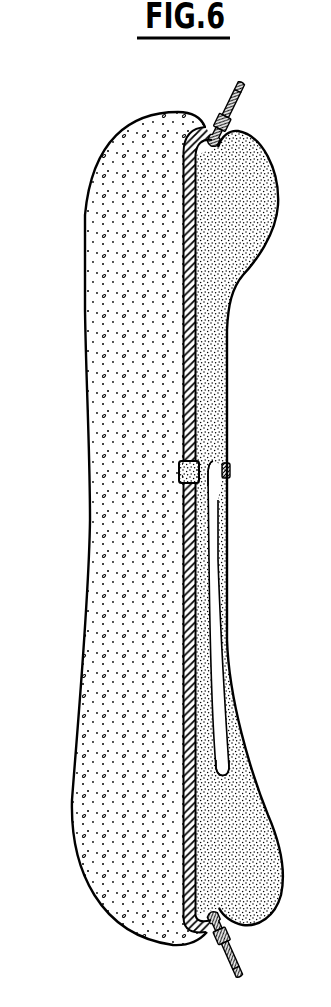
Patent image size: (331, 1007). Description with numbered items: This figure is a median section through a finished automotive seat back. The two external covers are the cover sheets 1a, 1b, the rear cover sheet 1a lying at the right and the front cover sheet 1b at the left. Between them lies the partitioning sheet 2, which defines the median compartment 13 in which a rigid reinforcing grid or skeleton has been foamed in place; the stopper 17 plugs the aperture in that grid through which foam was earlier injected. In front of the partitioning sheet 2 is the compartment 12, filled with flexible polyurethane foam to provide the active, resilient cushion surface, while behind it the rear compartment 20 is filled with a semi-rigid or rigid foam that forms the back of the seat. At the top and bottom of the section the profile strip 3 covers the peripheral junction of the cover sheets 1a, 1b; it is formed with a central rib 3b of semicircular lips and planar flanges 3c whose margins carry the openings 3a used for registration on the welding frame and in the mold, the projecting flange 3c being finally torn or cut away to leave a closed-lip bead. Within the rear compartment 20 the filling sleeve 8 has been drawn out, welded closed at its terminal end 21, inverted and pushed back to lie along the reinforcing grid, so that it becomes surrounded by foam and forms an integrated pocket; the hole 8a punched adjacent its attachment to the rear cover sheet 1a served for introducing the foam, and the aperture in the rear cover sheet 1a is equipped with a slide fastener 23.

The cover sheet 1a is at (228, 375).
The cover sheet 1b is at (85, 378).
The partitioning sheet 2 is at (183, 258).
The profile strip 3 is at (221, 143).
The openings 3a is at (245, 88).
The central rib 3b is at (230, 123).
The planar flange 3c is at (227, 104).
The filling sleeve 8 is at (207, 628).
The hole 8a is at (217, 454).
The compartment 12 is at (142, 597).
The compartment 13 is at (186, 320).
The stopper 17 is at (180, 473).
The rear compartment 20 is at (220, 247).
The welded closed terminal end 21 is at (222, 763).
The slide fastener 23 is at (231, 474).